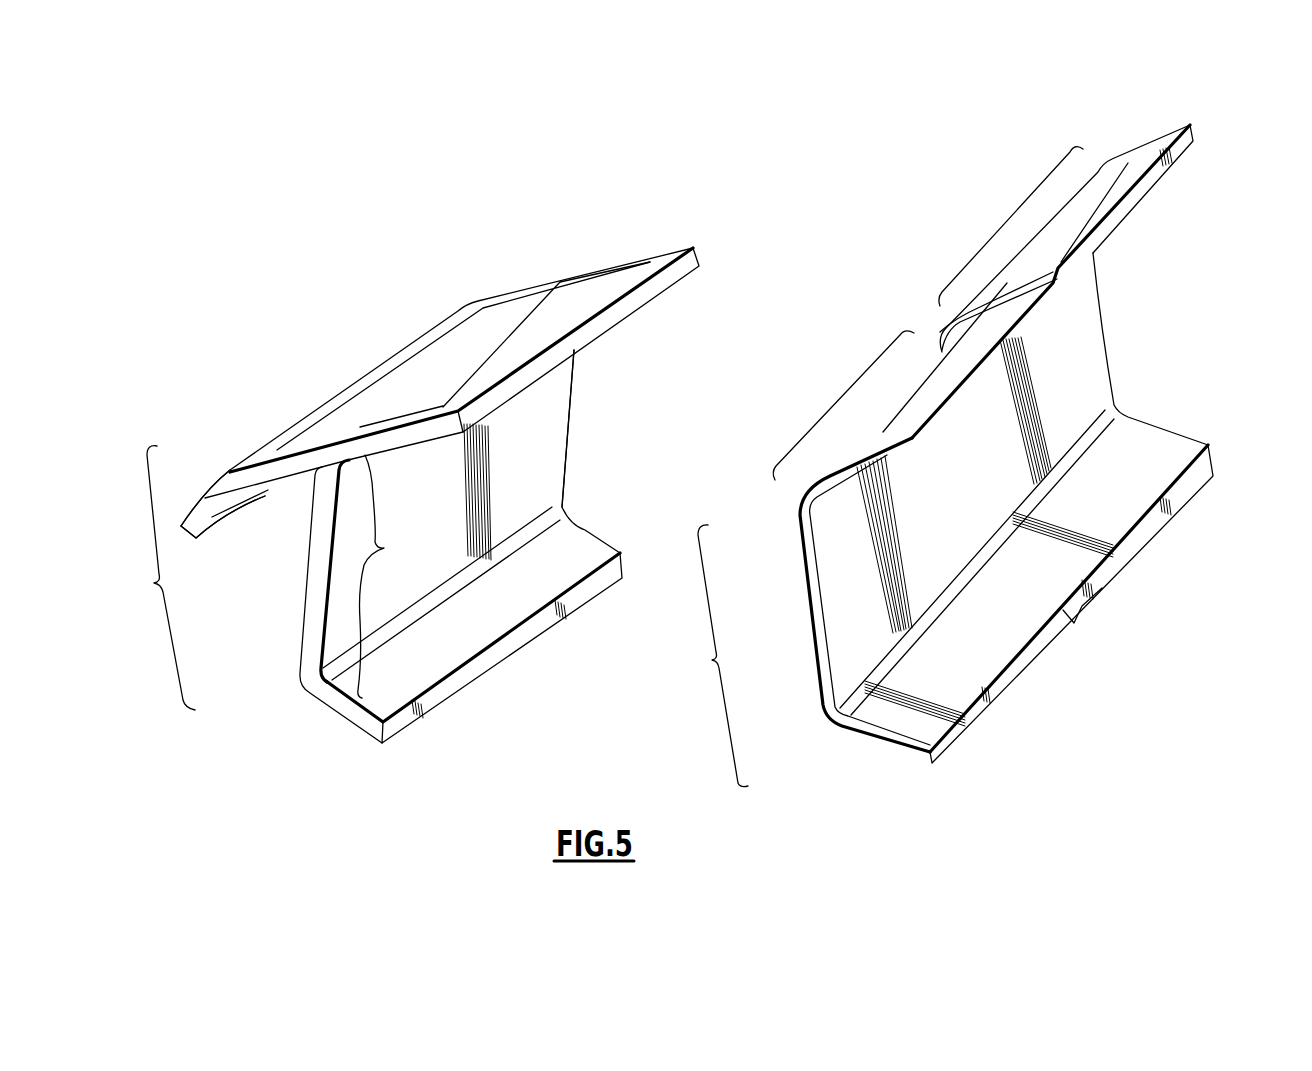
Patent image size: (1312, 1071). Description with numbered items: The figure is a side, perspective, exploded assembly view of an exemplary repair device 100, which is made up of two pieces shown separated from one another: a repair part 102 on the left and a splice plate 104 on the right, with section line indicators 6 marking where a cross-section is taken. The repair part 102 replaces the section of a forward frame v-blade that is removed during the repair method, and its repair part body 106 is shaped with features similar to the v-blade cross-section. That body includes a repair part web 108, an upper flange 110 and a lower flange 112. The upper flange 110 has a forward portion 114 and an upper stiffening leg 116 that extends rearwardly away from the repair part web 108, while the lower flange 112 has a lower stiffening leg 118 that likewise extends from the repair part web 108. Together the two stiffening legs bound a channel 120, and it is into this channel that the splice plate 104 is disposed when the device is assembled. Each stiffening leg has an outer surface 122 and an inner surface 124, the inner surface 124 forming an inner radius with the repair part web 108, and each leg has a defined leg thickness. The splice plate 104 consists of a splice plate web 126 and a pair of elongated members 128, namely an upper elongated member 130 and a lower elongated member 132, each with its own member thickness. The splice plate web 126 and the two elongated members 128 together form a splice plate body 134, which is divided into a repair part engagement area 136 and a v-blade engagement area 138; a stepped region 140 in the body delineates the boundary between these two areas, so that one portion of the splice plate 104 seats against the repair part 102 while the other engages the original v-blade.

The section line 6- 6 is at (50, 446).
The repair device 100 is at (343, 145).
The repair part 102 is at (294, 295).
The splice plate 104 is at (968, 150).
The repair part body 106 is at (154, 583).
The repair part web 108 is at (291, 592).
The upper flange 110 is at (669, 229).
The lower flange 112 is at (423, 765).
The forward portion 114 is at (238, 440).
The upper stiffening leg 116 is at (525, 311).
The lower stiffening leg 118 is at (451, 712).
The channel 120 is at (604, 404).
The outer surface 122 is at (636, 273).
The inner surface 124 is at (392, 576).
The splice plate web 126 is at (803, 612).
The elongated members 128 is at (1174, 190).
The upper elongated member 130 is at (1150, 146).
The lower elongated member 132 is at (1212, 456).
The splice plate body 134 is at (712, 660).
The repair part engagement area 136 is at (848, 388).
The v-blade engagement area 138 is at (1010, 212).
The stepped region 140 is at (930, 334).